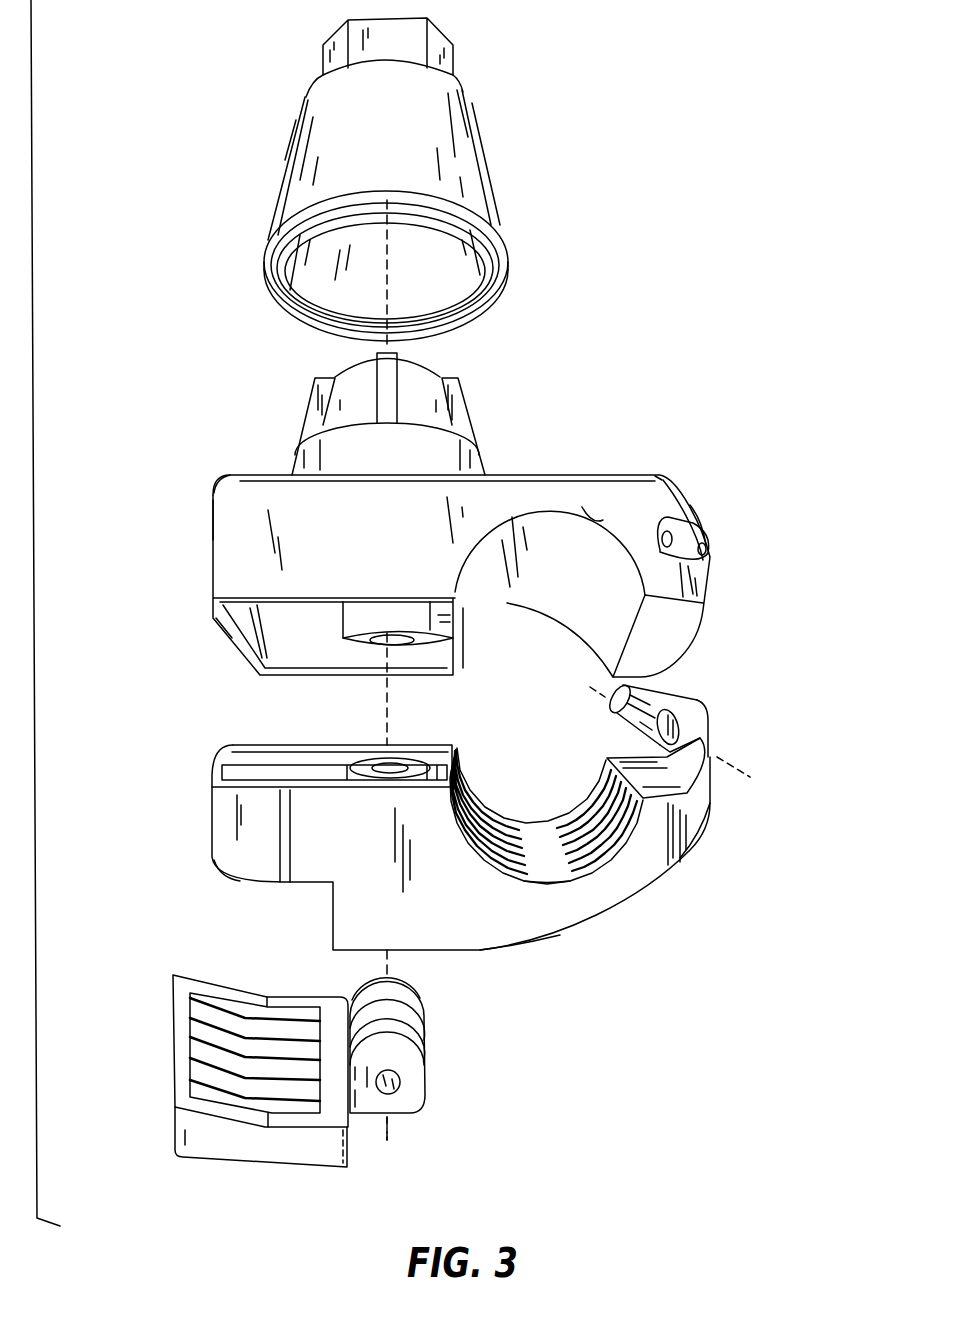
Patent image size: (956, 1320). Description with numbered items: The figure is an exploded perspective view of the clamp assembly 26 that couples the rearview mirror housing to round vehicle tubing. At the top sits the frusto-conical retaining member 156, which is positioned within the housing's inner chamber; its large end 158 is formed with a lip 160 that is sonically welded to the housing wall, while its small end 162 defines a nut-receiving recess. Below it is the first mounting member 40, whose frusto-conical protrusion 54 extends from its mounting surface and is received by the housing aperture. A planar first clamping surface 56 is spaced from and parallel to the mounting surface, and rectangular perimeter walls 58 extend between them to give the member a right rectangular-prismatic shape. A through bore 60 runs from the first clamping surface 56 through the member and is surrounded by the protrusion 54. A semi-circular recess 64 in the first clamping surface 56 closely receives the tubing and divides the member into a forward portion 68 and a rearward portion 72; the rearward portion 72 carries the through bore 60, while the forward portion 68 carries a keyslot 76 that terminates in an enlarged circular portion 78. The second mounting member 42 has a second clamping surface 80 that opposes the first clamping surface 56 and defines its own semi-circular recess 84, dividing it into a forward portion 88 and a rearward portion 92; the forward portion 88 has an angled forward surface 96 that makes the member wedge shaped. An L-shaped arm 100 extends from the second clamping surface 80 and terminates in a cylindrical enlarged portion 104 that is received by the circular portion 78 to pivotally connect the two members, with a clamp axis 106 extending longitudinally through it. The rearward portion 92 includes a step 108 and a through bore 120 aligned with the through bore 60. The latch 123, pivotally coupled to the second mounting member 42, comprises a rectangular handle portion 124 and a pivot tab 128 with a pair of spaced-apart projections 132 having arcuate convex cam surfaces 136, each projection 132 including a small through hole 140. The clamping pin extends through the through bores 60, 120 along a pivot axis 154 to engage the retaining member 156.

The clamp assembly 26 is at (702, 982).
The first mounting member 40 is at (233, 547).
The second mounting member 42 is at (222, 827).
The frusto-conical protrusion 54 is at (472, 402).
The first clamping surface 56 is at (216, 632).
The perimeter walls 58 is at (212, 525).
The through bore 60 is at (377, 648).
The semi-circular recess 64 is at (603, 520).
The forward portion 68 is at (663, 478).
The rearward portion 72 is at (237, 492).
The keyslot 76 is at (708, 558).
The enlarged circular portion 78 is at (660, 550).
The second clamping surface 80 is at (228, 758).
The semi-circular recess 84 is at (567, 880).
The forward portion 88 is at (652, 887).
The rearward portion 92 is at (232, 878).
The forward surface 96 is at (557, 937).
The L-shaped arm 100 is at (706, 723).
The cylindrical enlarged portion 104 is at (628, 718).
The clamp axis 106 is at (733, 767).
The step 108 is at (286, 885).
The through bore 120 is at (397, 763).
The latch 123 is at (178, 988).
The handle portion 124 is at (208, 1150).
The pivot tab 128 is at (400, 1113).
The projections 132 is at (423, 1025).
The convex cam surfaces 136 is at (402, 992).
The through hole 140 is at (398, 1085).
The pivot axis 154 is at (400, 1143).
The frusto-conical retaining member 156 is at (477, 123).
The large end 158 is at (286, 172).
The lip 160 is at (268, 290).
The small end 162 is at (320, 72).